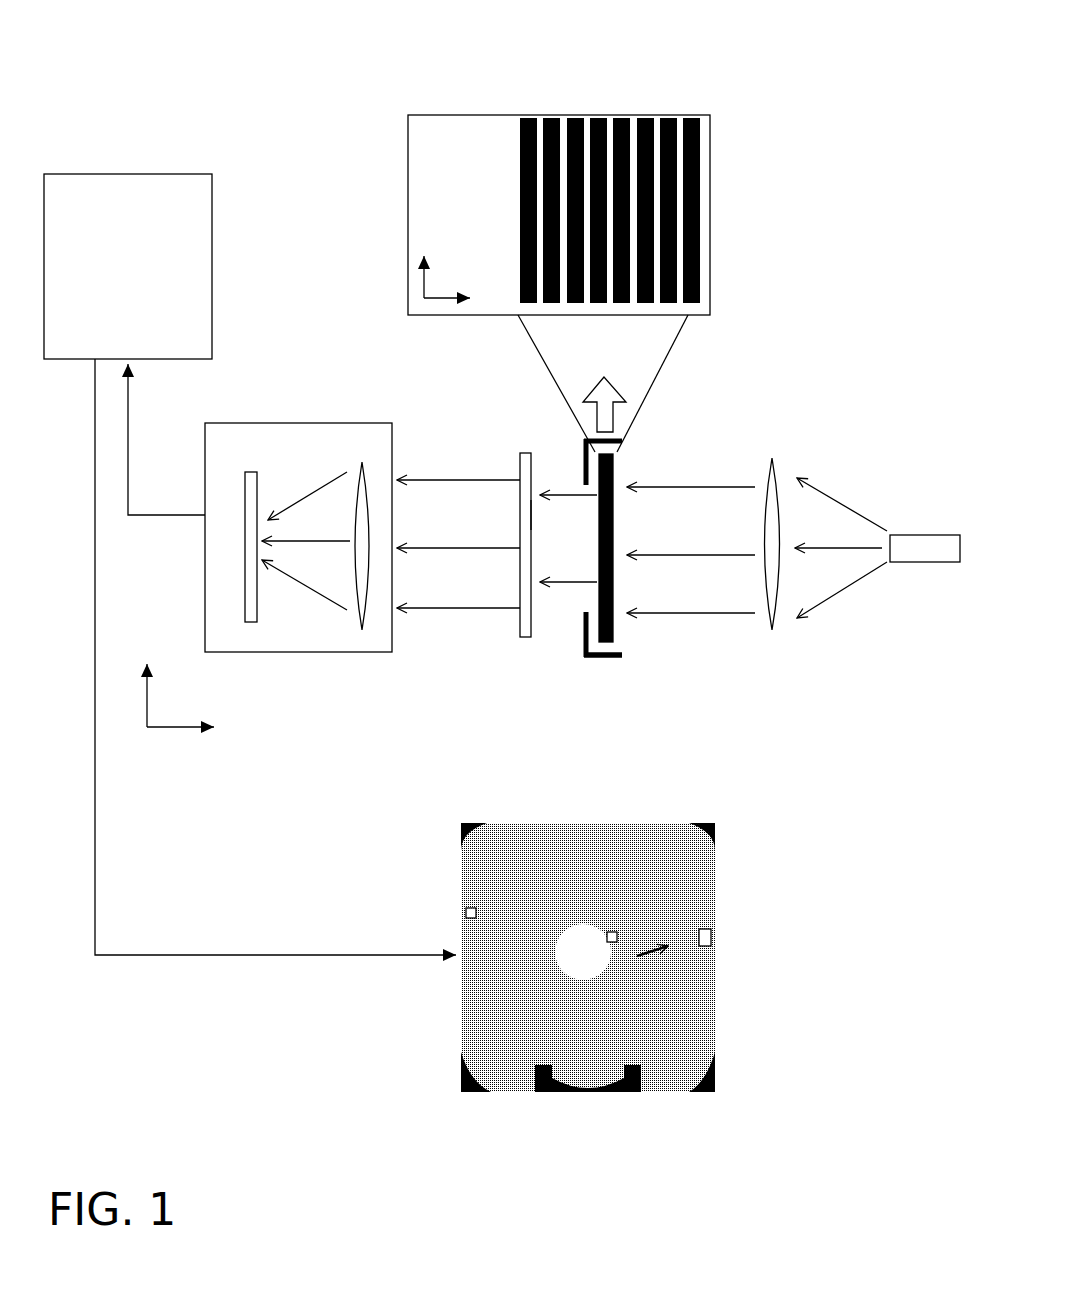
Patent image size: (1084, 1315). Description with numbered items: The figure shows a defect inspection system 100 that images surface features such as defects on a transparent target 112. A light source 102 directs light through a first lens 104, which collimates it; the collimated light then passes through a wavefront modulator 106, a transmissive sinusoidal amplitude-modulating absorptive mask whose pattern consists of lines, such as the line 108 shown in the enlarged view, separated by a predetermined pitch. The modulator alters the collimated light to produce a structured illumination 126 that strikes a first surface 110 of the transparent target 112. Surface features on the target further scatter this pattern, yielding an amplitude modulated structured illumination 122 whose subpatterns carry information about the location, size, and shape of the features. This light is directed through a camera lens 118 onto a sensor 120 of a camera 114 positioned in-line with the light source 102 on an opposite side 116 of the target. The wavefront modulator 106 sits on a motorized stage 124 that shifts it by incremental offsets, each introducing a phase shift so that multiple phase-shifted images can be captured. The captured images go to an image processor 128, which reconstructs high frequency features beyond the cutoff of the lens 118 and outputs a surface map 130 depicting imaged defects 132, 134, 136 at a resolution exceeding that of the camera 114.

The defect inspection system 100 is at (772, 50).
The light source 102 is at (877, 548).
The first lens 104 is at (774, 456).
The wavefront modulator 106 is at (620, 617).
The line 108 is at (698, 178).
The first surface 110 is at (561, 634).
The transparent target 112 is at (523, 622).
The camera 114 is at (334, 455).
The opposite side 116 is at (516, 519).
The camera lens 118 is at (367, 622).
The sensor 120 is at (257, 622).
The amplitude modulated structured illumination 122 is at (462, 531).
The motorized stage 124 is at (600, 656).
The structured illumination 126 is at (584, 542).
The image processor 128 is at (146, 304).
The surface map 130 is at (712, 1030).
The defect 132 is at (467, 910).
The defect 134 is at (612, 935).
The defect 136 is at (710, 932).